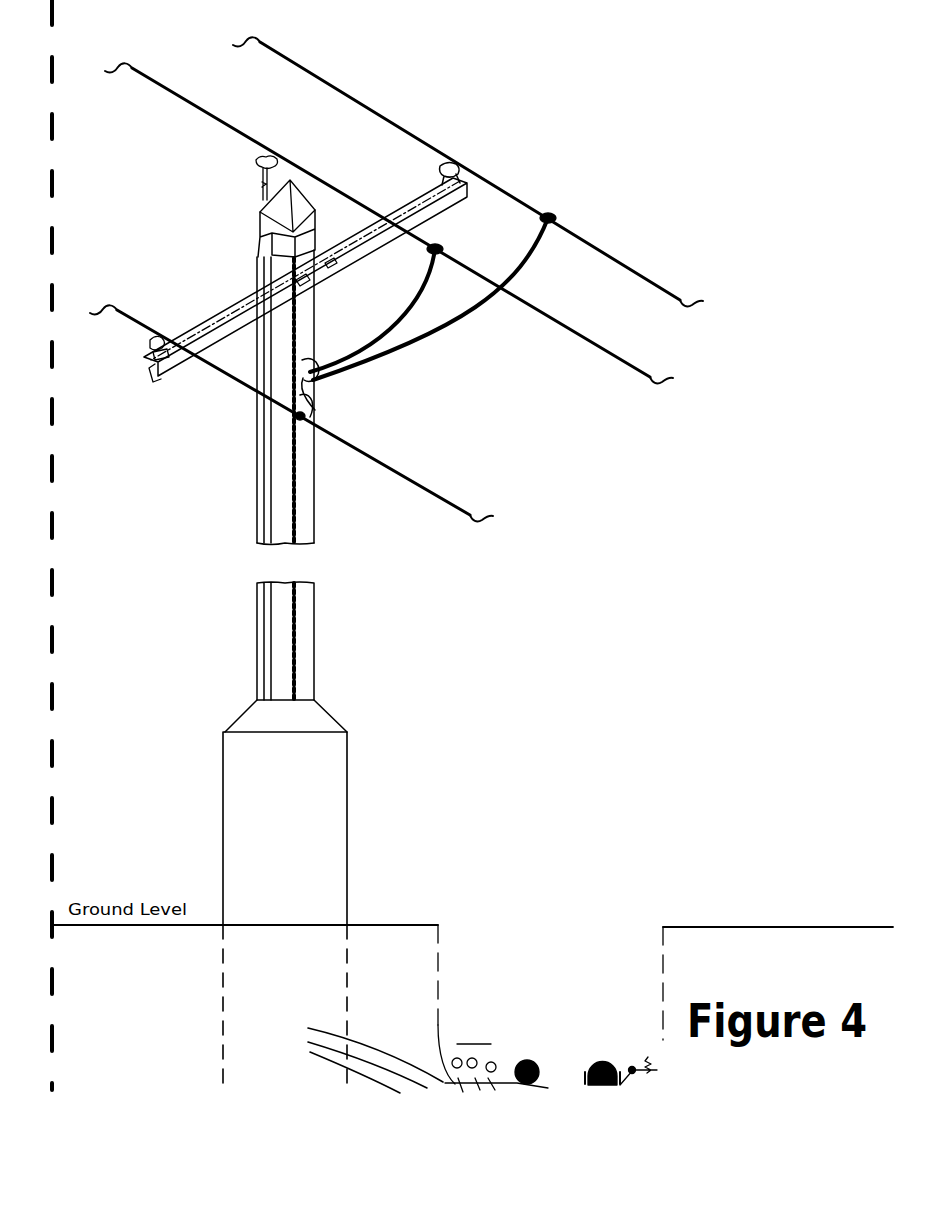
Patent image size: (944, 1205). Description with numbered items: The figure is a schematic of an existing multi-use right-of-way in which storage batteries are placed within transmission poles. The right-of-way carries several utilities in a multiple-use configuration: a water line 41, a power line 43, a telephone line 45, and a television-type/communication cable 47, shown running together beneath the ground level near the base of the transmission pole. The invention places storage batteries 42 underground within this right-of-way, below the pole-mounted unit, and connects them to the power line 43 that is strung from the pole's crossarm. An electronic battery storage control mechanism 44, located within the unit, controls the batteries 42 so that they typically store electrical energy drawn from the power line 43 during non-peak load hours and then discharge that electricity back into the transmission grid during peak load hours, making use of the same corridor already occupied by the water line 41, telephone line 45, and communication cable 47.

The water line 41 is at (527, 1052).
The storage batteries 42 is at (297, 970).
The power line 43 is at (383, 482).
The electronic battery storage control mechanism 44 is at (303, 840).
The telephone line 45 is at (648, 1057).
The television-type/communication cable 47 is at (627, 1066).